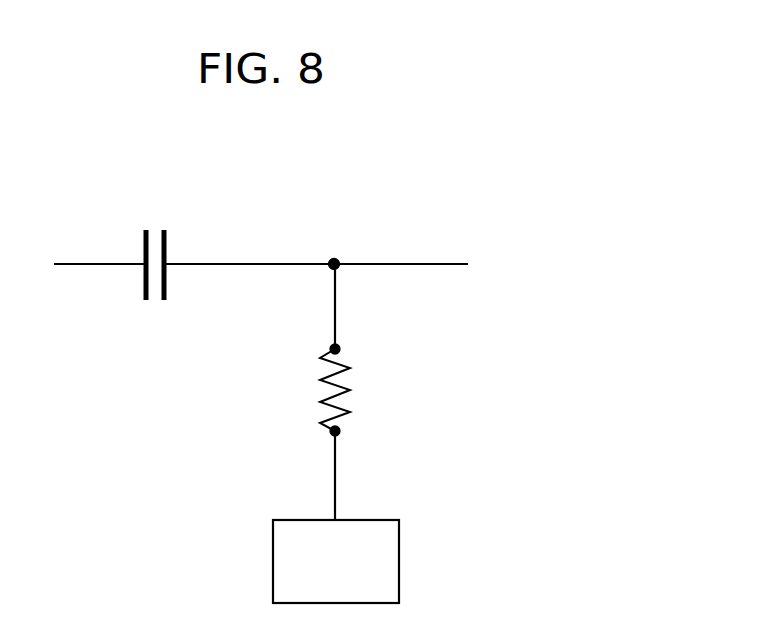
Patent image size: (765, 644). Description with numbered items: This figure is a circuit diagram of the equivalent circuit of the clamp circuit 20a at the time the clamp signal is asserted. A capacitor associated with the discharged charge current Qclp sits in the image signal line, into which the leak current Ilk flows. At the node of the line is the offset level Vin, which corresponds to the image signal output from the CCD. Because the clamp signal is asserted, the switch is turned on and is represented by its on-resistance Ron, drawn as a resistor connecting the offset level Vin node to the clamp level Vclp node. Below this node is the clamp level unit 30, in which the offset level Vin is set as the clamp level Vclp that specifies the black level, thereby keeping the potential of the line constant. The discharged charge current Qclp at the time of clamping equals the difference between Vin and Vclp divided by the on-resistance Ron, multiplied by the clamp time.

The clamp circuit 20a is at (382, 150).
The clamp level unit 30 is at (399, 558).
The discharged charge current Qclp is at (156, 250).
The leak current Ilk is at (233, 259).
The offset level Vin is at (352, 253).
The on-resistance Ron is at (462, 387).
The clamp level Vclp is at (363, 439).